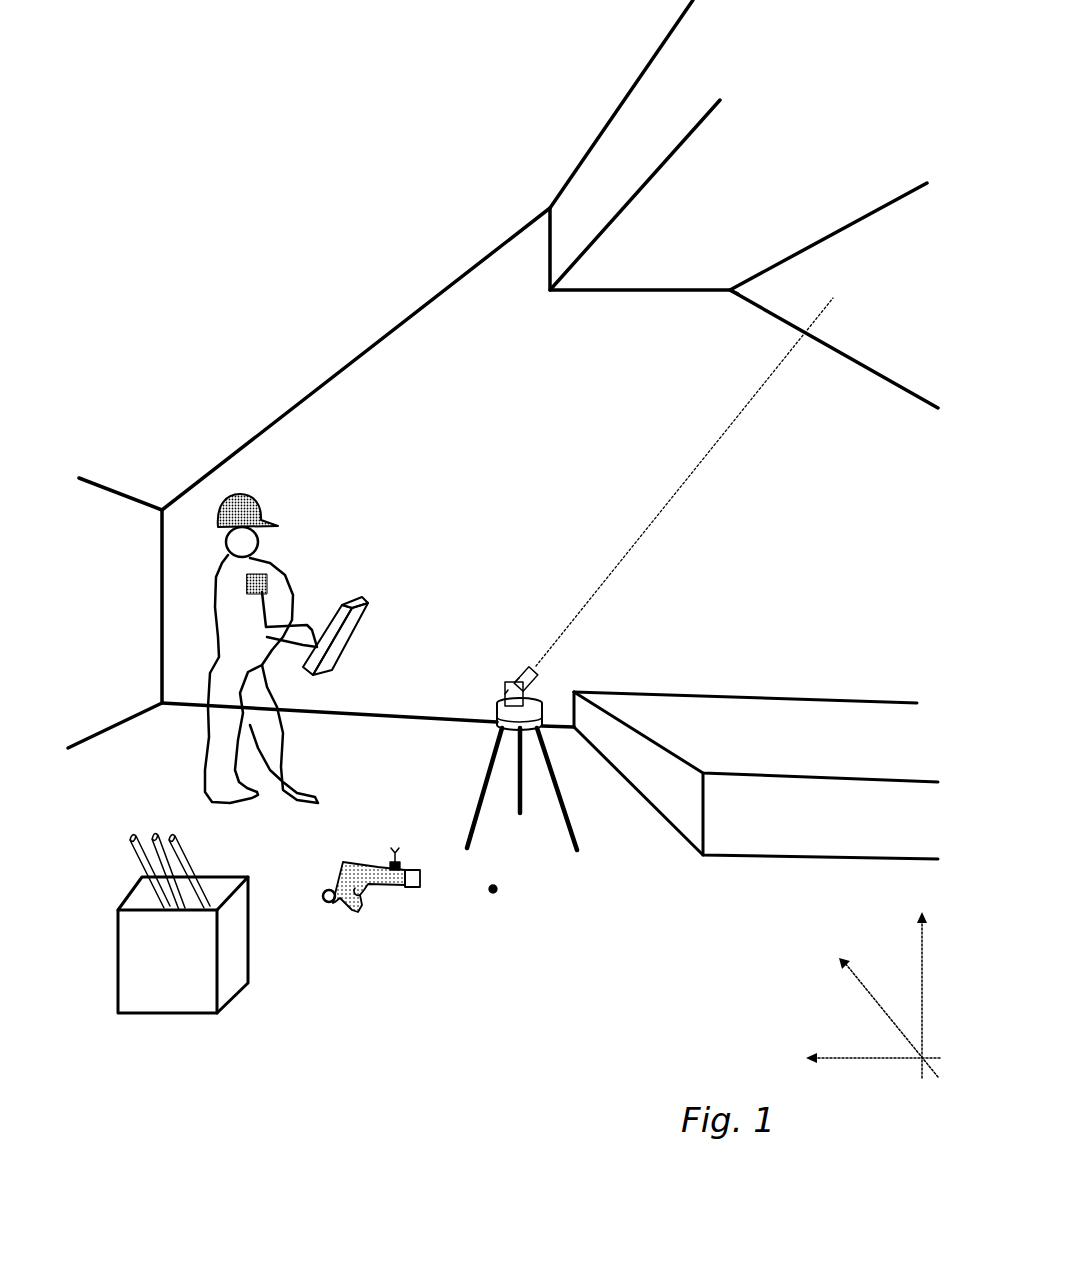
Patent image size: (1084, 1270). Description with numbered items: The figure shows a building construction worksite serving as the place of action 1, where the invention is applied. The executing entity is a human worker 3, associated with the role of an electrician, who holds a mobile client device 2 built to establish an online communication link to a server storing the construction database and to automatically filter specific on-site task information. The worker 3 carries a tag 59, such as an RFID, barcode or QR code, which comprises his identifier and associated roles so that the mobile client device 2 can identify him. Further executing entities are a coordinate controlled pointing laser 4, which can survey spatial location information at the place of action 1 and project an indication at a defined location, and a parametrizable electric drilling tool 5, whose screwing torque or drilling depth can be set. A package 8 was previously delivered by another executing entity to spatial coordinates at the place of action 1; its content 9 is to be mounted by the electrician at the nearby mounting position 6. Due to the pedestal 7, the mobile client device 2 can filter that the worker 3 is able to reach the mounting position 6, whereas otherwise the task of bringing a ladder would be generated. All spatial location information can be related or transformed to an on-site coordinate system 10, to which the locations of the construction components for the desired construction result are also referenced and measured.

The place of action 1 is at (493, 889).
The mobile client device 2 is at (363, 602).
The human worker 3 is at (262, 510).
The coordinate controlled pointing laser 4 is at (527, 727).
The parametrizable electric drilling tool 5 is at (335, 902).
The mounting position 6 is at (833, 298).
The pedestal 7 is at (712, 765).
The package 8 is at (190, 1002).
The package content 9 is at (172, 838).
The on-site coordinate system 10 is at (922, 1058).
The tag 59 is at (263, 575).